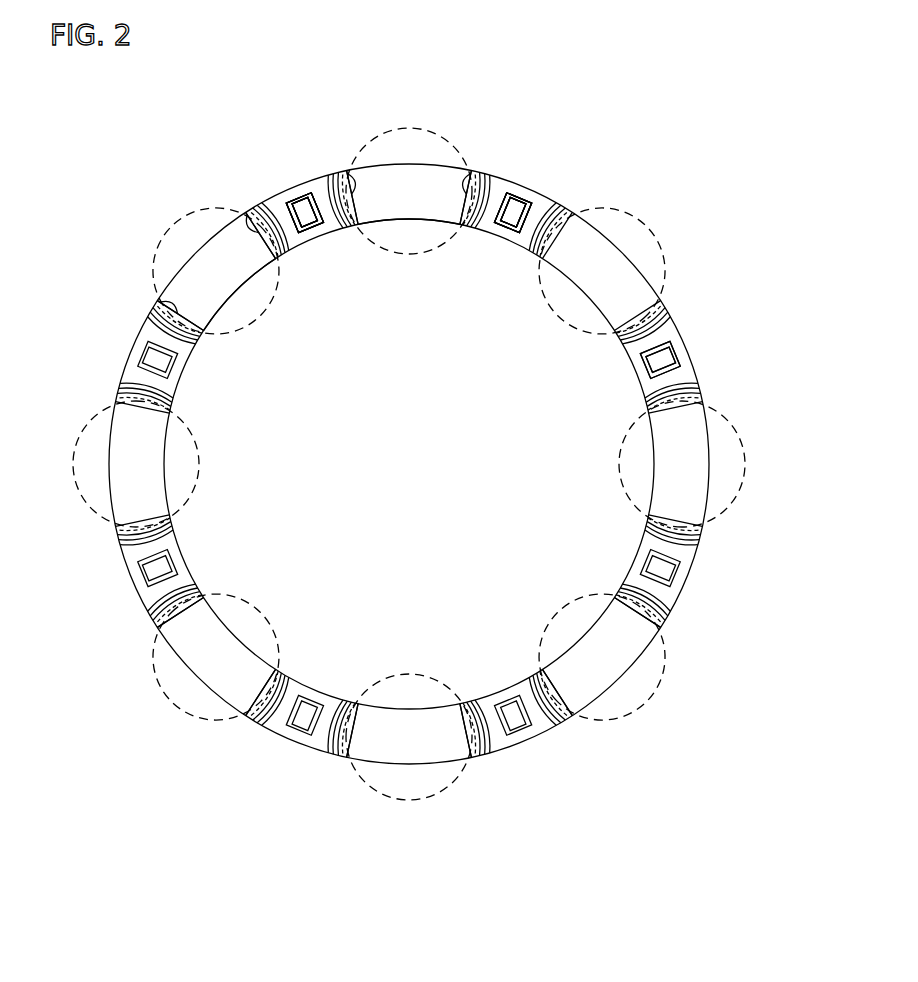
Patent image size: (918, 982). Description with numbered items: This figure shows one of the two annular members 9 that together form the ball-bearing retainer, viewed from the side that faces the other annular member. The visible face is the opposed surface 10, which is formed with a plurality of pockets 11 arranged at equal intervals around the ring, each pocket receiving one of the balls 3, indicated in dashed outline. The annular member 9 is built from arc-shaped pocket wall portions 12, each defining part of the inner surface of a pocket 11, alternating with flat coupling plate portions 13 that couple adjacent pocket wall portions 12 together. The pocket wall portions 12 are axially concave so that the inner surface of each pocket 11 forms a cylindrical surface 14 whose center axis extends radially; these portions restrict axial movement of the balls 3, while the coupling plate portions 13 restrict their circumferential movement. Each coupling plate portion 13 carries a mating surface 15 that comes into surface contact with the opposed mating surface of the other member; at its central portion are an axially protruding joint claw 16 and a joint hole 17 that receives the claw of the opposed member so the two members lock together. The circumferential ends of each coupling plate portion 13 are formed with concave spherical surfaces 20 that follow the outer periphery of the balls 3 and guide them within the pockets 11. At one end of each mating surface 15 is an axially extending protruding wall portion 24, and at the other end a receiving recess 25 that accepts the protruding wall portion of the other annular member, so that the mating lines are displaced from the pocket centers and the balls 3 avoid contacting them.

The balls 3 is at (457, 150).
The annular member 9 is at (122, 343).
The opposed surface 10 is at (681, 349).
The pocket 11 is at (398, 173).
The pocket wall portion 12 is at (258, 278).
The coupling plate portion 13 is at (320, 233).
The cylindrical surface 14 is at (218, 293).
The mating surface 15 is at (298, 196).
The joint claw 16 is at (287, 206).
The joint hole 17 is at (317, 203).
The concave spherical surface 20 is at (354, 185).
The protruding wall portion 24 is at (196, 340).
The receiving recess 25 is at (285, 253).